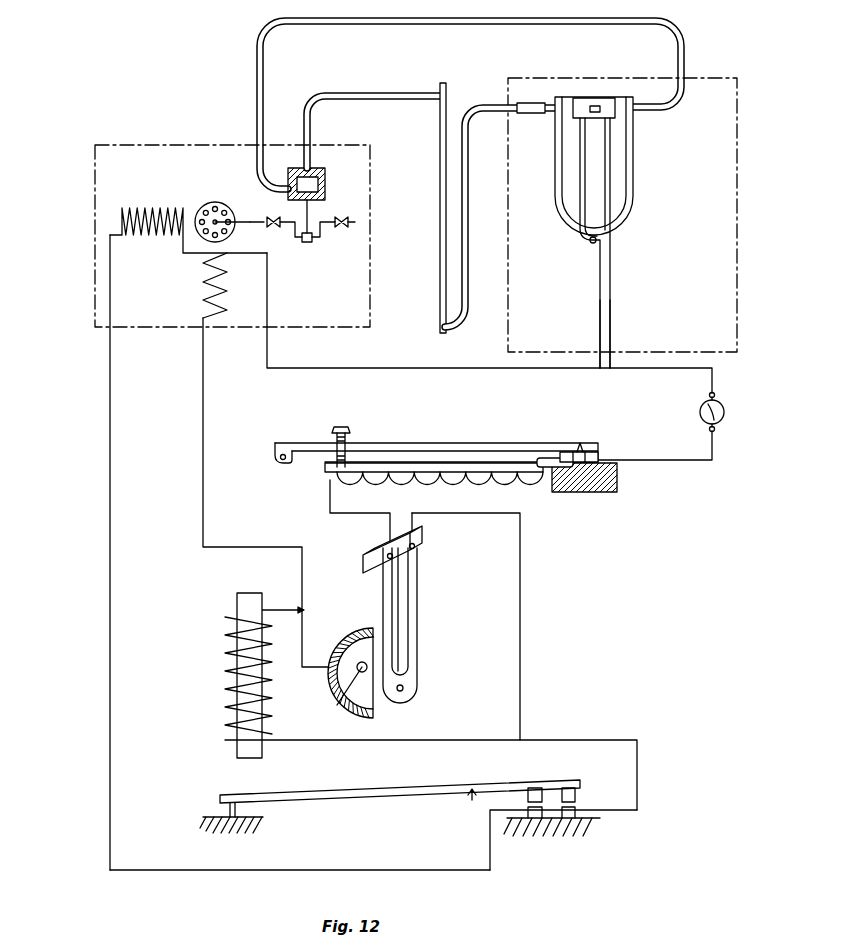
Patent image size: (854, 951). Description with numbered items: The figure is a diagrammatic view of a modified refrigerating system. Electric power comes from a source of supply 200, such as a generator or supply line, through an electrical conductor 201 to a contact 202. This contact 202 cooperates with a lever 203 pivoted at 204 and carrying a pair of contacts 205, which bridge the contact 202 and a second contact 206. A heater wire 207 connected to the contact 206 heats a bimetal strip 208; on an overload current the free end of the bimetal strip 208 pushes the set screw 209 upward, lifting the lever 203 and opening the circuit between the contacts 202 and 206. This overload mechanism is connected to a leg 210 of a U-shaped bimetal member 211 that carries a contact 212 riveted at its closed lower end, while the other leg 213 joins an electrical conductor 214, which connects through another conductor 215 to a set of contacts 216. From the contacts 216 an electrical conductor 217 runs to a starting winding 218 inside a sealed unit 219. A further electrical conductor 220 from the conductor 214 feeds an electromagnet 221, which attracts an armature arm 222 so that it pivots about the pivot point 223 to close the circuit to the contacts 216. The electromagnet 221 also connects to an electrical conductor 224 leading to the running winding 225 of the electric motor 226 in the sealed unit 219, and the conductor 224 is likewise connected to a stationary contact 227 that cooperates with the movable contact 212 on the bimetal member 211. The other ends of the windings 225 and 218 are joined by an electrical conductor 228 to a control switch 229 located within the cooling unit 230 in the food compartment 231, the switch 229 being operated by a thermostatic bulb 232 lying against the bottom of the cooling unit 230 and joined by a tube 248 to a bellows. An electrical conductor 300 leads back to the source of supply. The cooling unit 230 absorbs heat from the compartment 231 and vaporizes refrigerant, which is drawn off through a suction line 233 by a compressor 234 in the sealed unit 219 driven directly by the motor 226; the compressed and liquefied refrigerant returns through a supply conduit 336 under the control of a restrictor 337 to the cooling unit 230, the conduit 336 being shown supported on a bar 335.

The source of supply 200 is at (724, 408).
The electrical conductor 201 is at (660, 462).
The contact 202 is at (598, 456).
The lever 203 is at (465, 445).
The pivot 204 is at (281, 461).
The pair of contacts 205 is at (580, 445).
The second contact 206 is at (568, 470).
The heater wire 207 is at (510, 487).
The bimetal strip 208 is at (392, 465).
The set screw 209 is at (338, 430).
The leg 210 is at (390, 592).
The U-shaped bimetal member 211 is at (407, 680).
The contact 212 is at (383, 680).
The other leg 213 is at (412, 595).
The electrical conductor 214 is at (521, 648).
The conductor 215 is at (555, 740).
The set of contacts 216 is at (563, 818).
The electrical conductor 217 is at (267, 870).
The starting winding 218 is at (128, 209).
The sealed unit 219 is at (95, 248).
The electrical conductor 220 is at (400, 740).
The electromagnet 221 is at (247, 688).
The armature arm 222 is at (337, 797).
The pivot point 223 is at (468, 800).
The electrical conductor 224 is at (202, 473).
The running winding 225 is at (205, 305).
The electric motor 226 is at (210, 203).
The stationary contact 227 is at (337, 705).
The electrical conductor 228 is at (330, 367).
The control switch 229 is at (592, 98).
The cooling unit 230 is at (633, 172).
The food compartment 231 is at (737, 228).
The thermostatic bulb 232 is at (592, 244).
The suction line 233 is at (457, 22).
The compressor 234 is at (350, 168).
The tube 248 is at (580, 193).
The electrical conductor 300 is at (610, 312).
The support bar 335 is at (440, 232).
The supply conduit 336 is at (468, 198).
The restrictor 337 is at (528, 107).